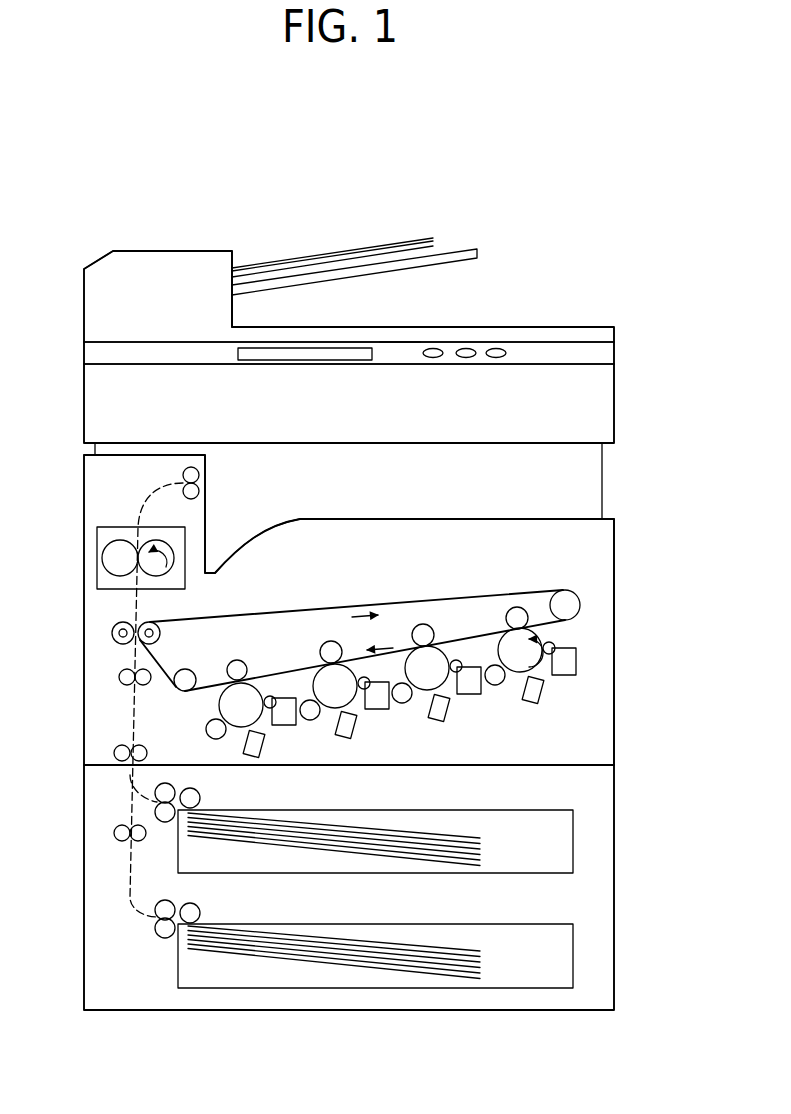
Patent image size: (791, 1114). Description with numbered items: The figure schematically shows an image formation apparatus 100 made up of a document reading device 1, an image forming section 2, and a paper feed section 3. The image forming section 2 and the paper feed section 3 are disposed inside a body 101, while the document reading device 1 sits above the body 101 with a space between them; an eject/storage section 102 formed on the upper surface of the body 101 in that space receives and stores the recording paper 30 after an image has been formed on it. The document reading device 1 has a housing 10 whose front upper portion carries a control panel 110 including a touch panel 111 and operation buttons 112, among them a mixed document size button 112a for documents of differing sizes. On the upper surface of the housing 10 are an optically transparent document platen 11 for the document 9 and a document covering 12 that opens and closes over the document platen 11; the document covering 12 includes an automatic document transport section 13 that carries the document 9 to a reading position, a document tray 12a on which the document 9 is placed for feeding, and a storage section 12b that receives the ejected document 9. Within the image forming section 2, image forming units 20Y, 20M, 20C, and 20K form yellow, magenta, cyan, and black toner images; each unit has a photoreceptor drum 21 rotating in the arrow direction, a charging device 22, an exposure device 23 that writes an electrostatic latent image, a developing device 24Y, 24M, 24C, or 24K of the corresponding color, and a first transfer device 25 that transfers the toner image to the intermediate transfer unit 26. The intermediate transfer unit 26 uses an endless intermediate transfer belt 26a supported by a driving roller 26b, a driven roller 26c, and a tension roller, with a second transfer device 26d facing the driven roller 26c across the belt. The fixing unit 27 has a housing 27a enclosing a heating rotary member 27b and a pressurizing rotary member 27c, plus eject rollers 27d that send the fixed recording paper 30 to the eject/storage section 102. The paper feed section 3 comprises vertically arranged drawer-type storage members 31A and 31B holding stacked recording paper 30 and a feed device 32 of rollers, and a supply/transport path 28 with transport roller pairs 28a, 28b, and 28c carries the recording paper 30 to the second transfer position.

The image formation apparatus 100 is at (222, 158).
The document reading device 1 is at (550, 236).
The housing 10 is at (616, 398).
The automatic document transport section 13 is at (143, 251).
The document covering 12 is at (596, 322).
The document tray 12a is at (452, 250).
The storage section 12b is at (352, 327).
The document 9 is at (322, 256).
The document platen 11 is at (588, 343).
The touch panel 111 is at (303, 354).
The control panel 110 is at (402, 350).
The operation buttons 112 is at (467, 340).
The mixed document size button 112a is at (490, 360).
The image forming section 2 is at (588, 558).
The body 101 is at (614, 697).
The eject/storage section 102 is at (427, 518).
The fixing unit 27 is at (104, 497).
The housing 27a is at (97, 527).
The heating rotary member 27b is at (165, 565).
The pressurizing rotary member 27c is at (105, 557).
The eject rollers 27d is at (199, 475).
The supply/transport path 28 is at (120, 712).
The transport roller pair 28a is at (114, 833).
The transport roller pair 28b is at (114, 753).
The transport roller pair 28c is at (118, 677).
The intermediate transfer unit 26 is at (343, 596).
The intermediate transfer belt 26a is at (286, 614).
The driving roller 26b is at (160, 633).
The driven roller 26c is at (183, 691).
The second transfer device 26d is at (112, 633).
The first transfer device 25 is at (506, 616).
The photoreceptor drum 21 is at (543, 636).
The charging device 22 is at (496, 685).
The exposure device 23 is at (533, 703).
The image forming unit 20K is at (232, 740).
The image forming unit 20C is at (332, 740).
The image forming unit 20M is at (428, 735).
The image forming unit 20Y is at (564, 735).
The developing device 24K is at (283, 725).
The developing device 24C is at (386, 710).
The developing device 24M is at (468, 693).
The developing device 24Y is at (561, 675).
The paper feed section 3 is at (585, 898).
The recording paper 30 is at (455, 835).
The storage member 31A is at (378, 873).
The storage member 31B is at (378, 988).
The feed device 32 is at (163, 830).